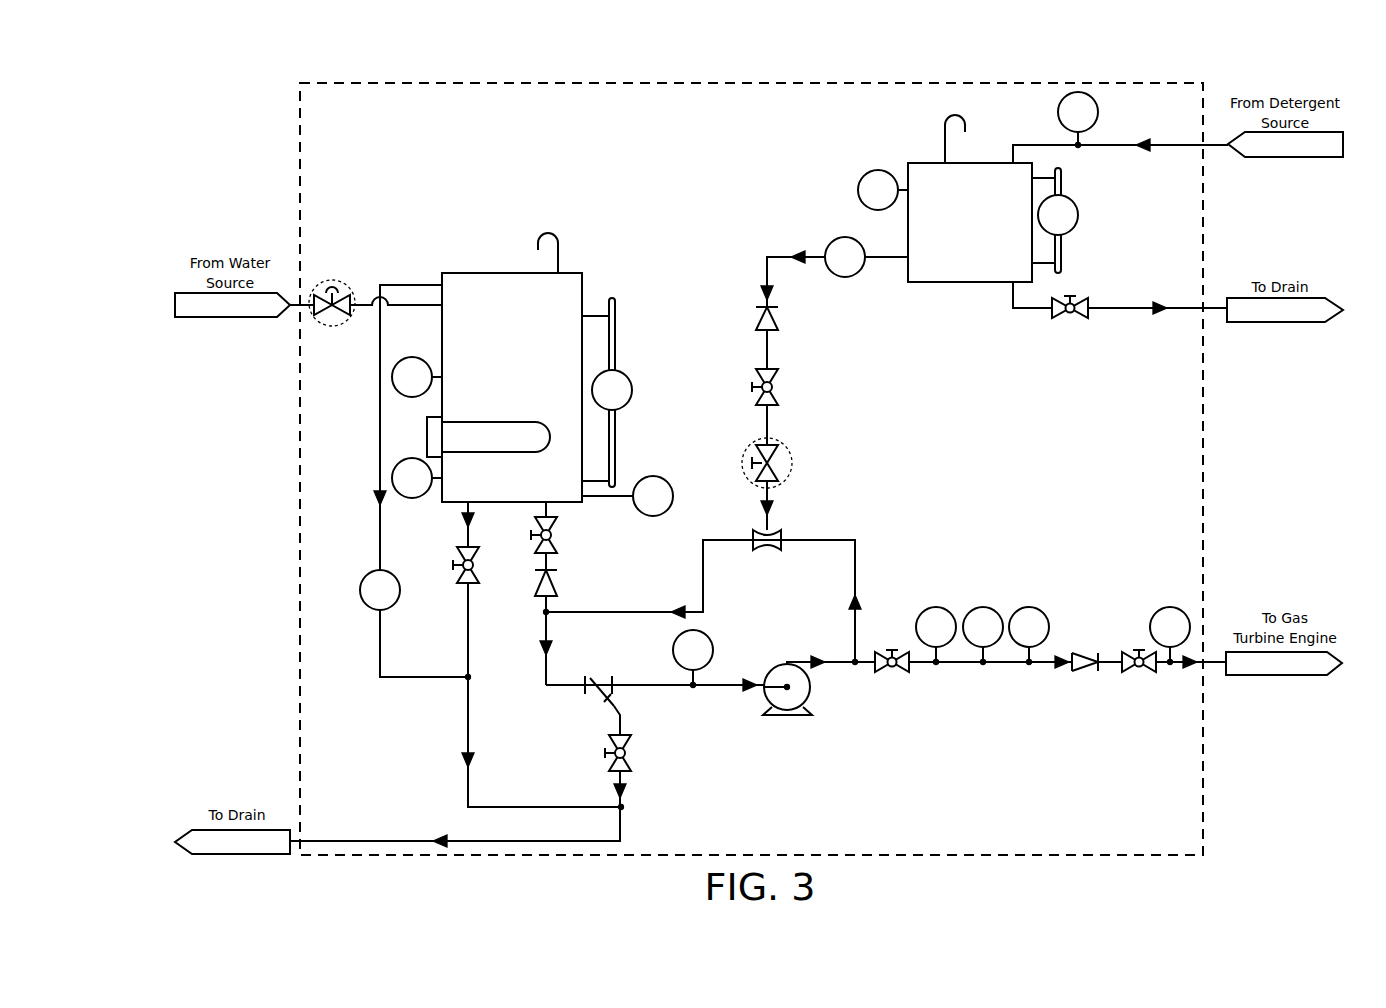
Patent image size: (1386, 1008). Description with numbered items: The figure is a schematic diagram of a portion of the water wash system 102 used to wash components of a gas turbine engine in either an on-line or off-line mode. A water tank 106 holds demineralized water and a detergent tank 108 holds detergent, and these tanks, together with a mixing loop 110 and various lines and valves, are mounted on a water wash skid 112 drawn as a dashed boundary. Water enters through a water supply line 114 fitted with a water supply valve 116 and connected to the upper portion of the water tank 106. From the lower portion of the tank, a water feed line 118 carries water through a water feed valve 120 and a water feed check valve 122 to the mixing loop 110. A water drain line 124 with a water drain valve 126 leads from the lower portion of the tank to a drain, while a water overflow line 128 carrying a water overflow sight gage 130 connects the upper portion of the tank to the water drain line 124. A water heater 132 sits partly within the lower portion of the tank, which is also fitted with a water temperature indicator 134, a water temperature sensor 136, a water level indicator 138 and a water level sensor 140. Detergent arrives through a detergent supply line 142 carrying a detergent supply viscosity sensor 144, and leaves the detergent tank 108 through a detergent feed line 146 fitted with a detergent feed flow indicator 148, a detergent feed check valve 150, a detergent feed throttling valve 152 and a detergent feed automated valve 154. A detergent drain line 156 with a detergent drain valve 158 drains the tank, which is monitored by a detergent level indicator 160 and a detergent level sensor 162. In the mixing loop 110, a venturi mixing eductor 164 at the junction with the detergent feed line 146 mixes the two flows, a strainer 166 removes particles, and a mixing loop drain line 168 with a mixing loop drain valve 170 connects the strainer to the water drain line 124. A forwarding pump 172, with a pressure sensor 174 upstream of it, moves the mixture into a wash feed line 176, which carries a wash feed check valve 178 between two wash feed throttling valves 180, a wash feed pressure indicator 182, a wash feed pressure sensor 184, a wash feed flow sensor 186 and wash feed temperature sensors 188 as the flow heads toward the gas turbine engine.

The water wash system 102 is at (262, 72).
The water tank 106 is at (504, 367).
The detergent tank 108 is at (970, 198).
The mixing loop 110 is at (844, 528).
The water wash skid 112 is at (1013, 855).
The water supply line 114 is at (365, 302).
The water supply valve 116 is at (335, 280).
The water feed line 118 is at (593, 536).
The water feed valve 120 is at (560, 540).
The water feed check valve 122 is at (550, 584).
The water drain line 124 is at (466, 622).
The water drain valve 126 is at (460, 565).
The water overflow line 128 is at (378, 404).
The water overflow sight gage 130 is at (366, 575).
The water heater 132 is at (488, 437).
The water temperature indicator 134 is at (397, 465).
The water temperature sensor 136 is at (656, 476).
The water level indicator 138 is at (627, 374).
The water level sensor 140 is at (396, 369).
The detergent supply line 142 is at (1185, 148).
The detergent supply viscosity sensor 144 is at (1060, 117).
The detergent feed line 146 is at (893, 258).
The detergent feed flow indicator 148 is at (831, 242).
The detergent feed check valve 150 is at (772, 316).
The detergent feed throttling valve 152 is at (774, 388).
The detergent feed automated valve 154 is at (790, 455).
The detergent drain line 156 is at (1185, 311).
The detergent drain valve 158 is at (1063, 320).
The detergent level indicator 160 is at (1073, 228).
The detergent level sensor 162 is at (864, 176).
The venturi mixing eductor 164 is at (768, 550).
The strainer 166 is at (598, 693).
The mixing loop drain line 168 is at (622, 724).
The mixing loop drain valve 170 is at (628, 752).
The forwarding pump 172 is at (807, 712).
The pressure sensor 174 is at (710, 640).
The wash feed line 176 is at (962, 665).
The wash feed check valve 178 is at (1085, 672).
The wash feed throttling valve 180 is at (888, 668).
The wash feed pressure indicator 182 is at (940, 606).
The wash feed pressure sensor 184 is at (988, 606).
The wash feed flow sensor 186 is at (1030, 606).
The wash feed temperature sensor 188 is at (1168, 606).